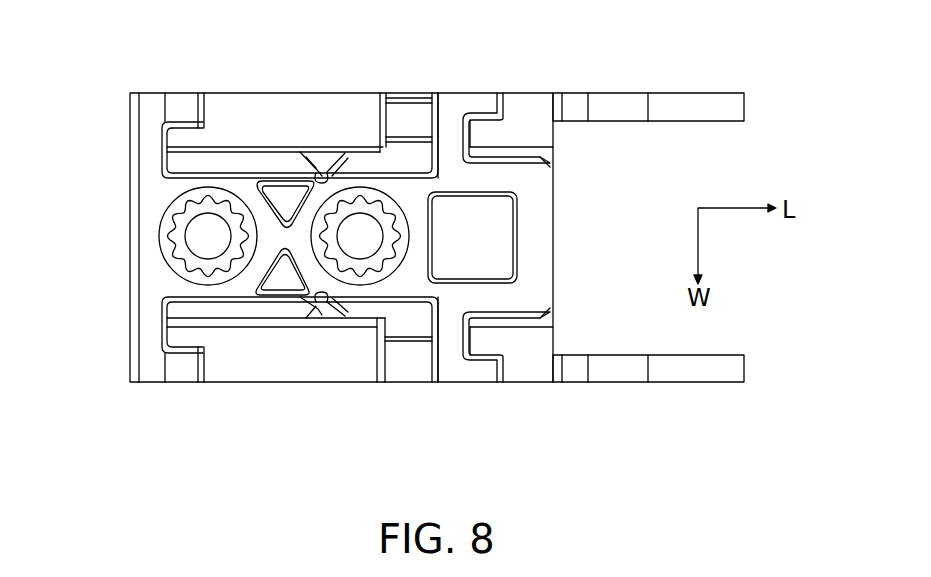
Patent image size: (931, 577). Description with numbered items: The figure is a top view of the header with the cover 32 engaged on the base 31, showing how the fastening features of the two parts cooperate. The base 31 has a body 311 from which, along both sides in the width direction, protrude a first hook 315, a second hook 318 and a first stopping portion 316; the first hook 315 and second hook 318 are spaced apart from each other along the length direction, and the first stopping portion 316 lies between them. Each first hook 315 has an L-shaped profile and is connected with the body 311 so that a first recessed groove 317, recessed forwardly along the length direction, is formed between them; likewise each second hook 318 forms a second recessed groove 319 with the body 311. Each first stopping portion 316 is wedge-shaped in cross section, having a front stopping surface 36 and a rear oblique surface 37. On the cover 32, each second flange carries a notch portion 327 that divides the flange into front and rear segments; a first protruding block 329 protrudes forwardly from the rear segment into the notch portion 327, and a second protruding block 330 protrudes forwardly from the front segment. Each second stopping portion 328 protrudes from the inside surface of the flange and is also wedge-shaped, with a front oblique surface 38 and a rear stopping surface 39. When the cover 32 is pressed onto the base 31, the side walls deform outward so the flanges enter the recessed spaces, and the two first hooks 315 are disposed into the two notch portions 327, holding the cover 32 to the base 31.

The base 31 is at (520, 237).
The cover 32 is at (680, 93).
The front stopping surface 36 is at (285, 238).
The rear oblique surface 37 is at (342, 165).
The front oblique surface 38 is at (302, 160).
The rear stopping surface 39 is at (311, 162).
The body 311 is at (152, 237).
The first hook 315 is at (453, 135).
The first stopping portion 316 is at (328, 172).
The first recessed groove 317 is at (495, 110).
The second hook 318 is at (160, 152).
The second recessed groove 319 is at (167, 93).
The notch portion 327 is at (413, 92).
The second stopping portion 328 is at (297, 158).
The first protruding block 329 is at (488, 138).
The second protruding block 330 is at (183, 142).